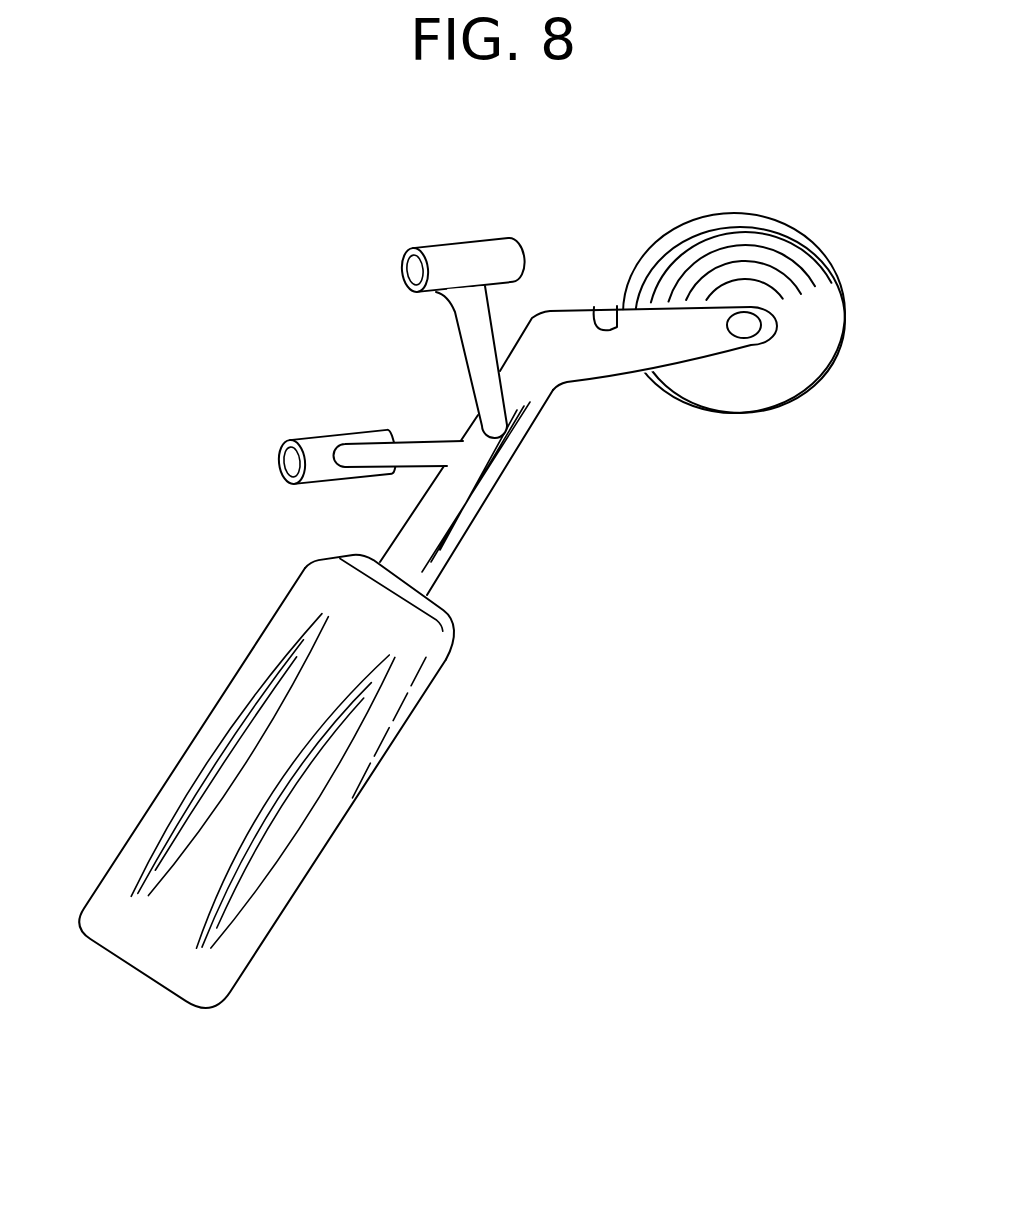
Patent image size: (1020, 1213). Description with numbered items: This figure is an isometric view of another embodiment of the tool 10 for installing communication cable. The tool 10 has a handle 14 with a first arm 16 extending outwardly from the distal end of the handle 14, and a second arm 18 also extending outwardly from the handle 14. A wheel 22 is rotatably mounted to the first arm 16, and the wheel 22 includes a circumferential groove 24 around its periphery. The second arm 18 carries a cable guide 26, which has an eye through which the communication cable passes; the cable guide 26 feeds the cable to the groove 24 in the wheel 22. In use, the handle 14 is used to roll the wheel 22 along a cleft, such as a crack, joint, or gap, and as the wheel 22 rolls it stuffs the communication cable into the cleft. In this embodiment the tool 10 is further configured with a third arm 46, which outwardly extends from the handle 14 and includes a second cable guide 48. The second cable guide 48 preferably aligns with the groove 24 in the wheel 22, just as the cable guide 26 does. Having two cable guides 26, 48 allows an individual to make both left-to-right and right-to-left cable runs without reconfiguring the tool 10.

The tool 10 is at (178, 232).
The handle 14 is at (402, 528).
The first arm 16 is at (580, 308).
The second arm 18 is at (458, 332).
The wheel 22 is at (736, 213).
The circumferential groove 24 is at (690, 237).
The cable guide 26 is at (474, 240).
The third arm 46 is at (428, 442).
The second cable guide 48 is at (322, 432).